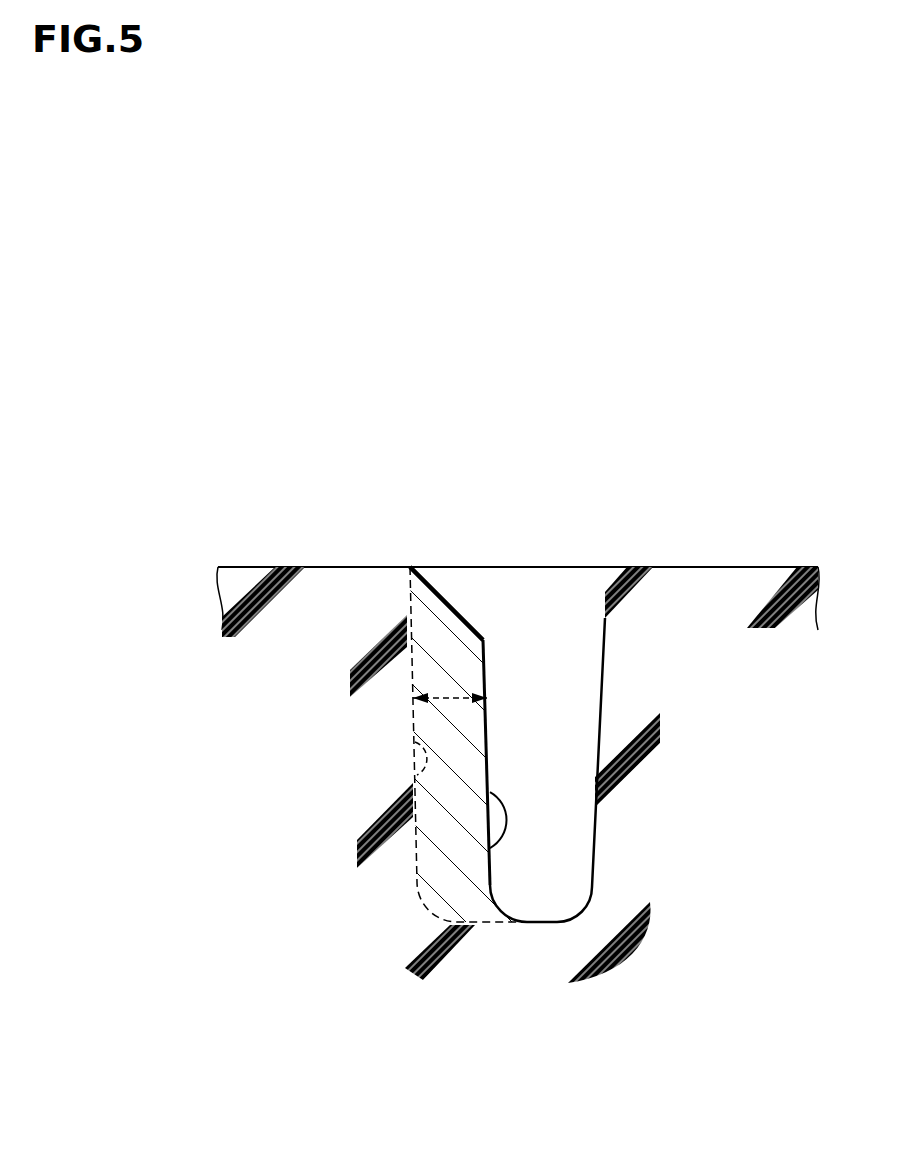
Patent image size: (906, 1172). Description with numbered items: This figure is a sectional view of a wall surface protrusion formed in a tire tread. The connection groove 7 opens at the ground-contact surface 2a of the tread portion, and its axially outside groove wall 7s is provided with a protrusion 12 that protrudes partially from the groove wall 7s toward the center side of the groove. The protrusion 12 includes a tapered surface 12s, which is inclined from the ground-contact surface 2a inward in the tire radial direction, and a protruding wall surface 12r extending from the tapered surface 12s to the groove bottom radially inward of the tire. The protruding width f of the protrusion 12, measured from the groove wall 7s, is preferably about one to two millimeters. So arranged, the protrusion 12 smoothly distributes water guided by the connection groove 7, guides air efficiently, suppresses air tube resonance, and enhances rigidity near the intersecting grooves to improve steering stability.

The ground-contact surface 2a is at (317, 567).
The tapered surface 12s is at (448, 603).
The connection groove 7 is at (553, 610).
The protrusion 12 is at (438, 723).
The protruding width f is at (450, 696).
The groove wall 7s is at (415, 780).
The protruding wall surface 12r is at (507, 820).